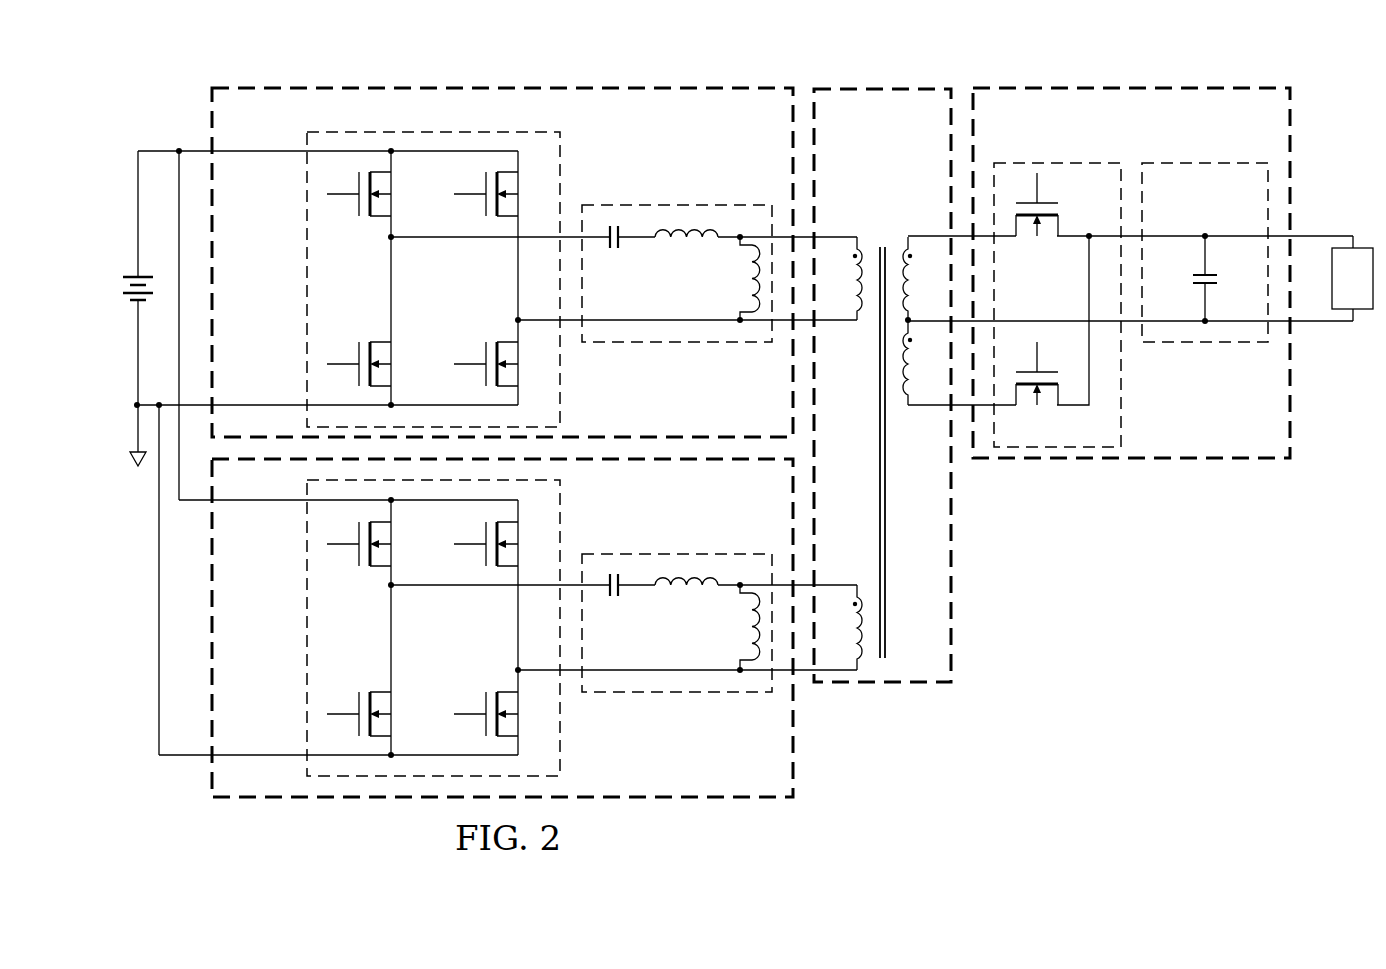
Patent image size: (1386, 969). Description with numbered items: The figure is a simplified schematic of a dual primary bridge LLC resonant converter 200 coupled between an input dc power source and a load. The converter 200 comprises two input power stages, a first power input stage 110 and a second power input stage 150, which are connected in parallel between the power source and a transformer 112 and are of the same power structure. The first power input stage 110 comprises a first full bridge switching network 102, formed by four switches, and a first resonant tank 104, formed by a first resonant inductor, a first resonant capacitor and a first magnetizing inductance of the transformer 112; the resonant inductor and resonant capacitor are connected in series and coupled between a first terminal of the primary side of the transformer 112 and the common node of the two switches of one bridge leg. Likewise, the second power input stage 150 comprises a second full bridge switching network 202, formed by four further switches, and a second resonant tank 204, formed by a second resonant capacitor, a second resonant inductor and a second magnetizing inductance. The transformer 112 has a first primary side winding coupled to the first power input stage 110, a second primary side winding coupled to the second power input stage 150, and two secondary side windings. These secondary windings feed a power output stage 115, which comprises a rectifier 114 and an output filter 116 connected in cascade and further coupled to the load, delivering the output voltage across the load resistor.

The dual primary bridge LLC resonant converter 200 is at (1110, 639).
The first power input stage 110 is at (512, 86).
The first full bridge switching network 102 is at (302, 267).
The first resonant tank 104 is at (664, 203).
The second power input stage 150 is at (338, 799).
The second full bridge switching network 202 is at (302, 641).
The second resonant tank 204 is at (665, 694).
The transformer 112 is at (897, 86).
The power output stage 115 is at (1130, 86).
The rectifier 114 is at (1068, 161).
The output filter 116 is at (1216, 161).